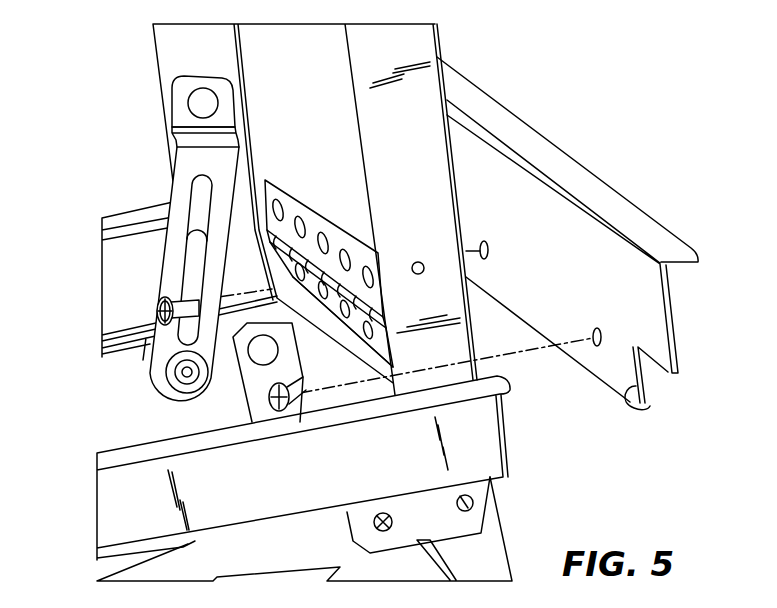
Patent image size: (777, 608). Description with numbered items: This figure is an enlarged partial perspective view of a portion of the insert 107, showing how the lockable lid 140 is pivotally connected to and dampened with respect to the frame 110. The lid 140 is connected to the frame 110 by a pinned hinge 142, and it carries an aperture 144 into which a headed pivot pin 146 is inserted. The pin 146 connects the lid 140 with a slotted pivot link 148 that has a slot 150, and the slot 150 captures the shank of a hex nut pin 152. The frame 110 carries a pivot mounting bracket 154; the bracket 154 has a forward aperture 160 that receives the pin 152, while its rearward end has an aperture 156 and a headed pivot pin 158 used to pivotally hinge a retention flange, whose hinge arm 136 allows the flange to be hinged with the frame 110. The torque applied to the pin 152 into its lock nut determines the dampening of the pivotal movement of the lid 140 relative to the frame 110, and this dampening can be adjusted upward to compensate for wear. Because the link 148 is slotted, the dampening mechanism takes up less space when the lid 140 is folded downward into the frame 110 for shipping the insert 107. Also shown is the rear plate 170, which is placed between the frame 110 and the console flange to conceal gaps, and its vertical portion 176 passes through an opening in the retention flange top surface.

The insert 107 is at (91, 185).
The frame 110 is at (498, 422).
The hinge arm 136 is at (262, 357).
The lockable lid 140 is at (430, 43).
The pinned hinge 142 is at (289, 212).
The aperture 144 is at (413, 266).
The headed pivot pin 146 is at (208, 101).
The slotted pivot link 148 is at (176, 170).
The slot 150 is at (190, 262).
The hex nut pin 152 is at (183, 383).
The pivot mounting bracket 154 is at (486, 516).
The aperture 156 is at (473, 507).
The headed pivot pin 158 is at (256, 374).
The forward aperture 160 is at (379, 529).
The rear plate 170 is at (603, 182).
The vertical portion 176 is at (648, 408).